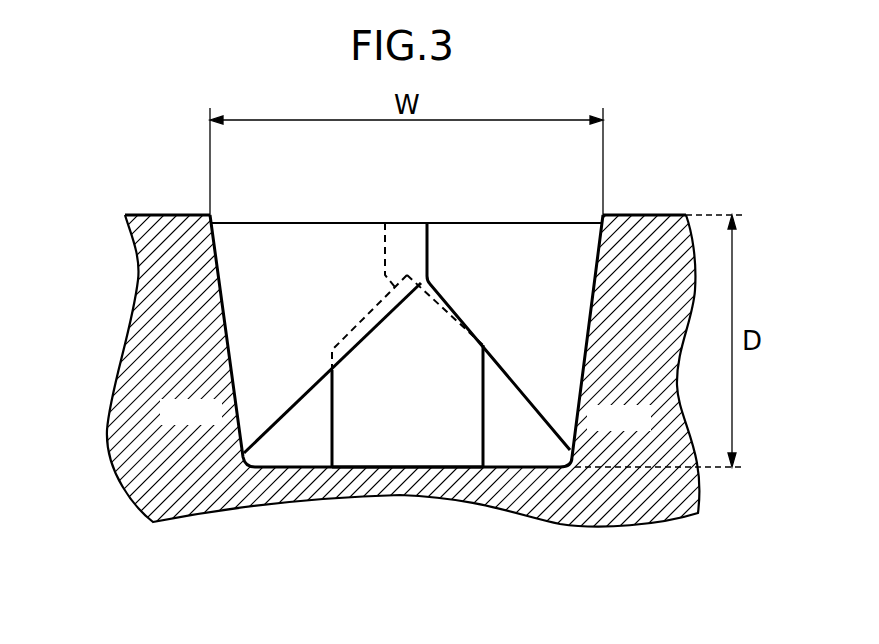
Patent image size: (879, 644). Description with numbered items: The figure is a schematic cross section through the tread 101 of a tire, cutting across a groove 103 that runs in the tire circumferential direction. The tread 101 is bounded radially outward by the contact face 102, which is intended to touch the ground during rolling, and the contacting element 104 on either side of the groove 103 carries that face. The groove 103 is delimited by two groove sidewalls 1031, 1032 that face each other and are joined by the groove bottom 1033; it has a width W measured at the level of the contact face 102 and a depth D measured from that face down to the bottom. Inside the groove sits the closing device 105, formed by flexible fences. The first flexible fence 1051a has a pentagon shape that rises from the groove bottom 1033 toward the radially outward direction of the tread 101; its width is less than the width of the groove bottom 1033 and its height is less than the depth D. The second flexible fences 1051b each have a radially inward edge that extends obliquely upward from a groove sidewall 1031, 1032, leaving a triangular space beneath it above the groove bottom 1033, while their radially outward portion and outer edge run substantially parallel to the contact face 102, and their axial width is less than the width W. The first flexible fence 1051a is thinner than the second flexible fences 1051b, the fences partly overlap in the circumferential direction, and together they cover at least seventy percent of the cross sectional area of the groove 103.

The tread 101 is at (640, 110).
The contact face 102 is at (170, 215).
The groove 103 is at (413, 222).
The contacting element 104 is at (147, 215).
The closing device 105 is at (378, 208).
The groove sidewall 1031 is at (234, 370).
The groove sidewall 1032 is at (584, 375).
The groove bottom 1033 is at (274, 467).
The first flexible fence 1051a is at (437, 443).
The second flexible fence 1051b is at (262, 230).